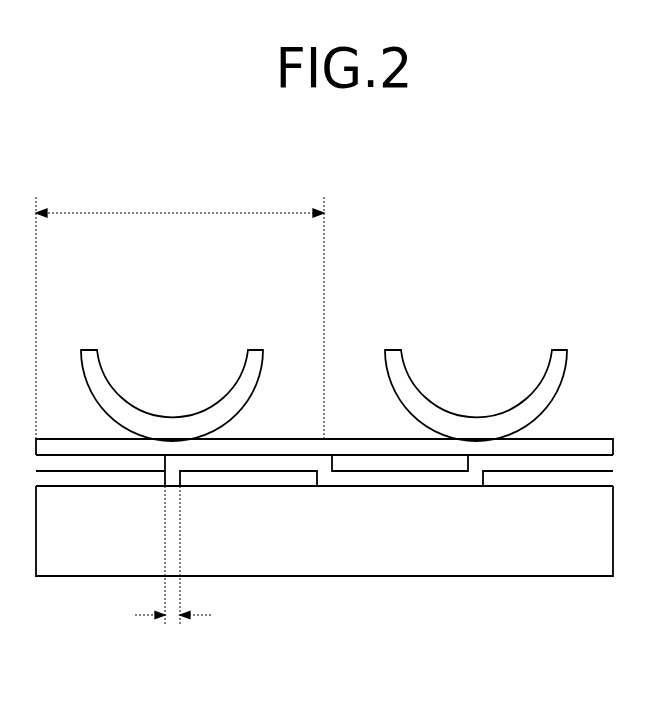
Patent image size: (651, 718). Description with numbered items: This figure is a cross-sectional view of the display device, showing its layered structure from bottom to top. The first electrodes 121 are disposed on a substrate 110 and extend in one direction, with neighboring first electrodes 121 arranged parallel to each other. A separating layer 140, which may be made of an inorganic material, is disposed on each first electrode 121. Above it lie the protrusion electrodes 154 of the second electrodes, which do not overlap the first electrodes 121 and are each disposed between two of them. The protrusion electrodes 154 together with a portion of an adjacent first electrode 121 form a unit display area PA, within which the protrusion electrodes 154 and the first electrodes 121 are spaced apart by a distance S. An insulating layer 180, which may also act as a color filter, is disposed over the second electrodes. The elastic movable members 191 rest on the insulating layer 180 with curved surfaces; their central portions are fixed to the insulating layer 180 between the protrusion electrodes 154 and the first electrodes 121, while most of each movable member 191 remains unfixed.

The substrate 110 is at (88, 553).
The first electrode 121 is at (268, 478).
The separating layer 140 is at (369, 477).
The protrusion electrode 154 is at (432, 462).
The insulating layer 180 is at (542, 448).
The movable member 191 is at (256, 350).
The unit display area PA is at (180, 309).
The distance S is at (173, 572).